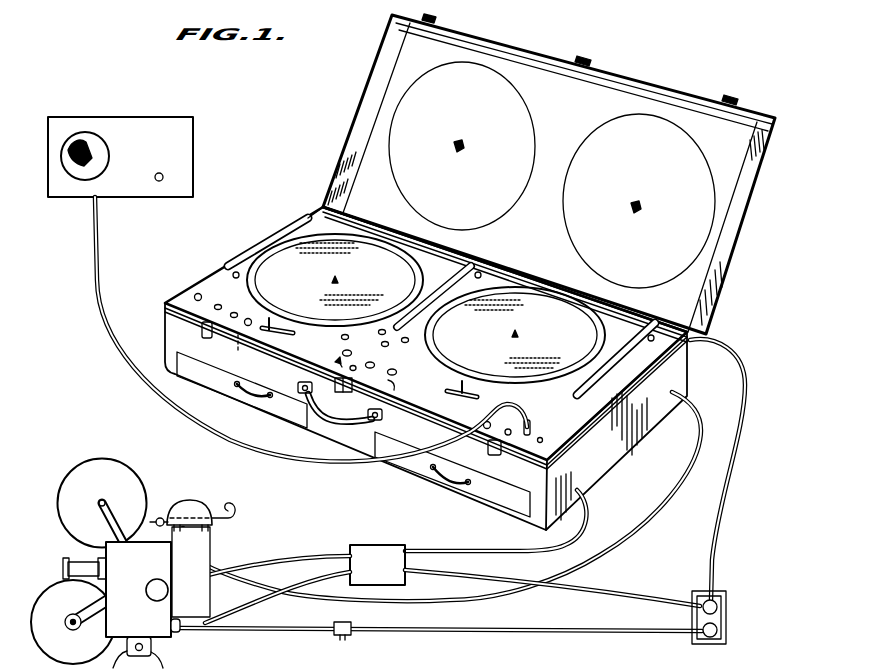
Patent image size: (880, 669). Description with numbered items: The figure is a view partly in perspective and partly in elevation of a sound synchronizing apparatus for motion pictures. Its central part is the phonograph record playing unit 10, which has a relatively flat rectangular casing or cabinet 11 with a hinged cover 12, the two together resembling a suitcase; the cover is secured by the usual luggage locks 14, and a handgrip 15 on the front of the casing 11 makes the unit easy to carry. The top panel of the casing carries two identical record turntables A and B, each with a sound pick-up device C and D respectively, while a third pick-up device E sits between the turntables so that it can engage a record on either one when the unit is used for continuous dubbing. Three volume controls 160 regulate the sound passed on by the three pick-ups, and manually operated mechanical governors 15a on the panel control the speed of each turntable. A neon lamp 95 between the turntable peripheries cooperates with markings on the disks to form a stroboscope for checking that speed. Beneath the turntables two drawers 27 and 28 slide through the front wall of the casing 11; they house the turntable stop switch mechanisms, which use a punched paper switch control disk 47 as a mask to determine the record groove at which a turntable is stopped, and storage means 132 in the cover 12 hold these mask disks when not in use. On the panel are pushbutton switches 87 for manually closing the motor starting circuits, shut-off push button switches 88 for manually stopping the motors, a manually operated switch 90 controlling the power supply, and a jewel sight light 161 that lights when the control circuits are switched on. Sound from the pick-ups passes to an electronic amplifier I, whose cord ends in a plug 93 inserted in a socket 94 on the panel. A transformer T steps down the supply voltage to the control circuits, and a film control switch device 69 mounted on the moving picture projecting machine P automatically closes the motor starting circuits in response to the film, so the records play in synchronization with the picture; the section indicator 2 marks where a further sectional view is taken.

The phonograph record playing unit 10 is at (299, 203).
The casing or cabinet 11 is at (620, 430).
The cover 12 is at (605, 76).
The locks 14 is at (200, 326).
The handgrip 15 is at (335, 419).
The mechanical governors 15a is at (264, 321).
The drawer 27 is at (272, 410).
The drawer 28 is at (418, 462).
The switch control disk 47 is at (573, 213).
The film control switch device 69 is at (193, 512).
The pushbutton switches 87 is at (340, 402).
The shut-off push button switches 88 is at (323, 364).
The manually operated switch 90 is at (198, 294).
The plug 93 is at (531, 424).
The socket 94 is at (527, 445).
The neon lamp 95 is at (370, 364).
The storage means for mask disks 132 is at (457, 143).
The volume controls 160 is at (345, 350).
The jewel sight light 161 is at (257, 310).
The section line 2- 2 is at (520, 207).
The turntable A is at (268, 263).
The turntable B is at (515, 292).
The sound pick-up device C is at (275, 232).
The sound pick-up device D is at (622, 350).
The sound pick-up device E is at (456, 280).
The electronic amplifier I is at (202, 117).
The moving picture projecting machine P is at (213, 548).
The transformer T is at (375, 552).